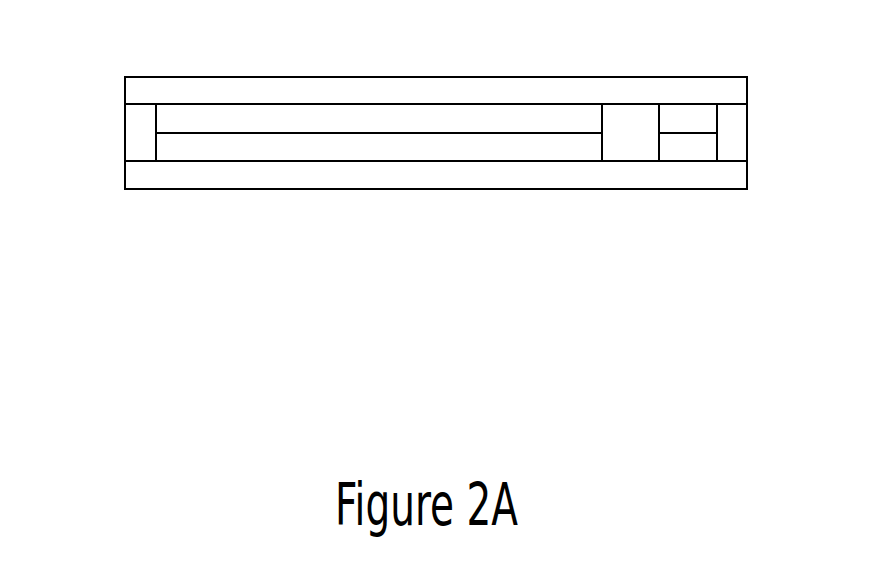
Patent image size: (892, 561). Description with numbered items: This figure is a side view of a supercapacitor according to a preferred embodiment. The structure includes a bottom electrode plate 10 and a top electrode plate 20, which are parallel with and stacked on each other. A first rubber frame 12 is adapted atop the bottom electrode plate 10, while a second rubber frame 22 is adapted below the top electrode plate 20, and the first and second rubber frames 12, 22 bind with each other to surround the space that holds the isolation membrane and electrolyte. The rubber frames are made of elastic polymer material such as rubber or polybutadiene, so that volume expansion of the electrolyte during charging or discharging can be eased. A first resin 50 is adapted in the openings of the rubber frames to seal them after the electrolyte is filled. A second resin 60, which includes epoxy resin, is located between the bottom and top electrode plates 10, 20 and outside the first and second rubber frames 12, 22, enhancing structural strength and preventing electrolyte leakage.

The bottom electrode plate 10 is at (137, 183).
The first rubber frame 12 is at (455, 147).
The top electrode plate 20 is at (135, 86).
The second rubber frame 22 is at (452, 115).
The first resin 50 is at (632, 124).
The second resin 60 is at (142, 138).